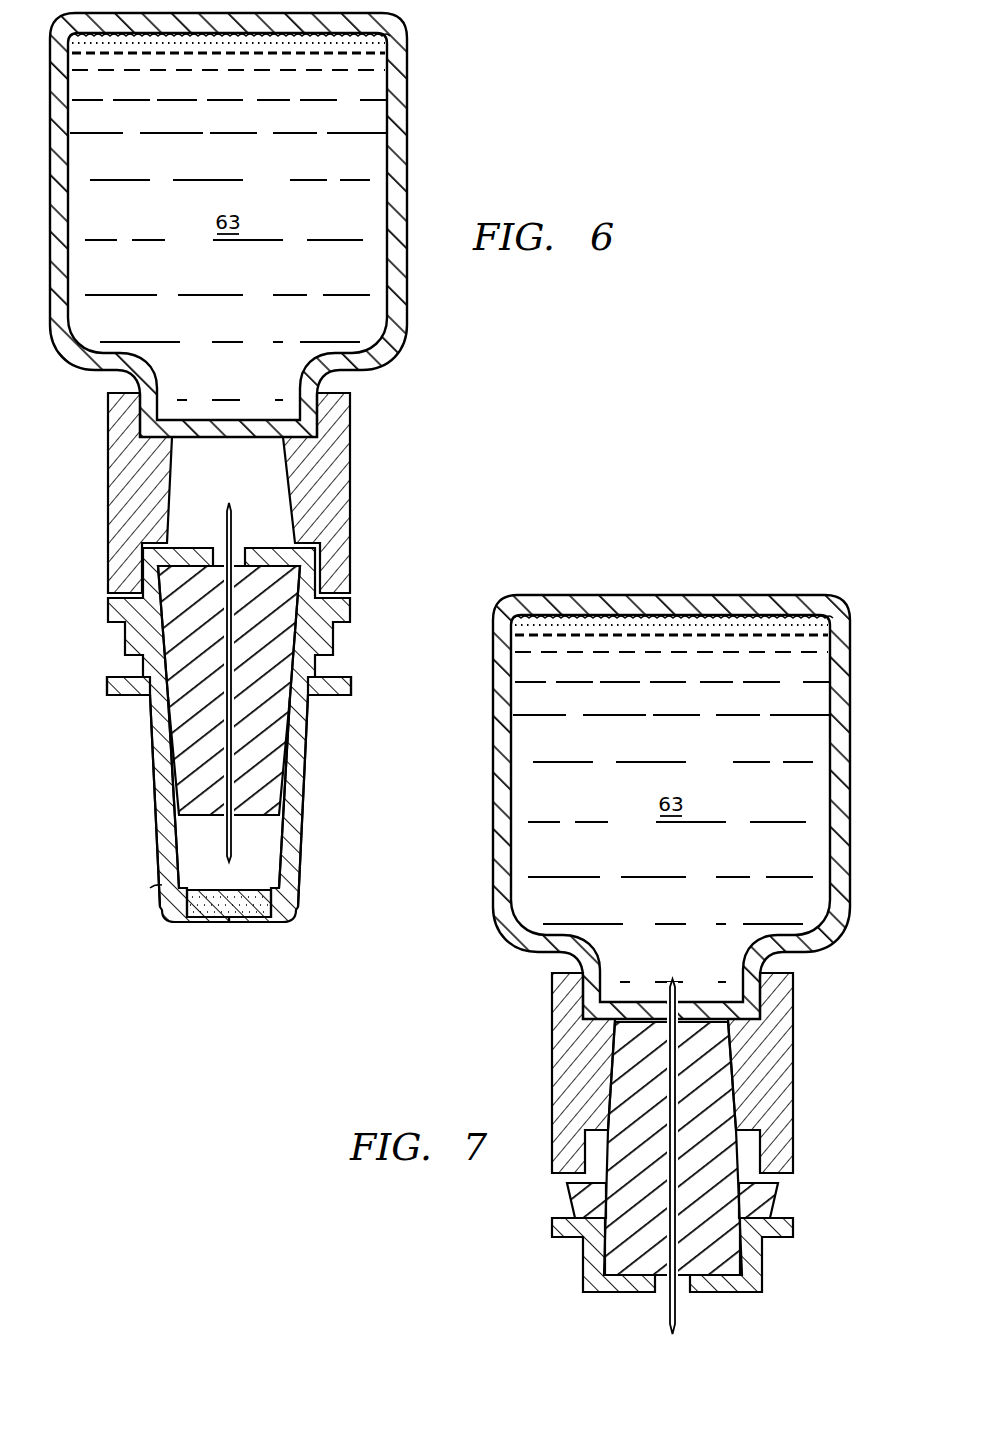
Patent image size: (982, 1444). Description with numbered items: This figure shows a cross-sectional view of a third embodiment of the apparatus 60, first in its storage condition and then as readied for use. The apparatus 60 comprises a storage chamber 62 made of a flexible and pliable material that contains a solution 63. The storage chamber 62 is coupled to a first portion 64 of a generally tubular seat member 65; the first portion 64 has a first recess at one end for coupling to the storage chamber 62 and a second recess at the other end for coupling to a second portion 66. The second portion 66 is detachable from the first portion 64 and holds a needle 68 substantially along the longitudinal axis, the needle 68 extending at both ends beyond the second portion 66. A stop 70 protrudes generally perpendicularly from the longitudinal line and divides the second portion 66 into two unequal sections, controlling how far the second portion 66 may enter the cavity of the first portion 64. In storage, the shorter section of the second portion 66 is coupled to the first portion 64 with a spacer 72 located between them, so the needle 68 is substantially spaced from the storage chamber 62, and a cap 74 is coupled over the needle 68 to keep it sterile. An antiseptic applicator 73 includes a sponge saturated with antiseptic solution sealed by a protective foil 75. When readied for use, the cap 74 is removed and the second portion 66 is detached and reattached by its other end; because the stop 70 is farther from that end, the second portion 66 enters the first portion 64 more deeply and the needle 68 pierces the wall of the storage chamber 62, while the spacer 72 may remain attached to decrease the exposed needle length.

In FIG. 6, the apparatus 60 is at (262, 225).
In FIG. 7, the apparatus 60 is at (690, 774).
In FIG. 6, the storage chamber 62 is at (396, 350).
In FIG. 7, the storage chamber 62 is at (690, 807).
In FIG. 6, the solution 63 is at (230, 217).
In FIG. 7, the solution 63 is at (673, 799).
In FIG. 6, the first portion 64 is at (350, 480).
In FIG. 7, the first portion 64 is at (698, 1073).
In FIG. 6, the seat member 65 is at (274, 680).
In FIG. 7, the seat member 65 is at (636, 1131).
In FIG. 6, the second portion 66 is at (202, 804).
In FIG. 7, the second portion 66 is at (673, 1182).
In FIG. 6, the needle 68 is at (229, 504).
In FIG. 7, the needle 68 is at (683, 1127).
In FIG. 6, the stop 70 is at (147, 641).
In FIG. 7, the stop 70 is at (676, 1201).
In FIG. 6, the spacer 72 is at (350, 592).
In FIG. 7, the spacer 72 is at (682, 1255).
In FIG. 6, the antiseptic applicator 73 is at (247, 918).
In FIG. 6, the cap 74 is at (301, 823).
In FIG. 6, the protective foil 75 is at (160, 887).